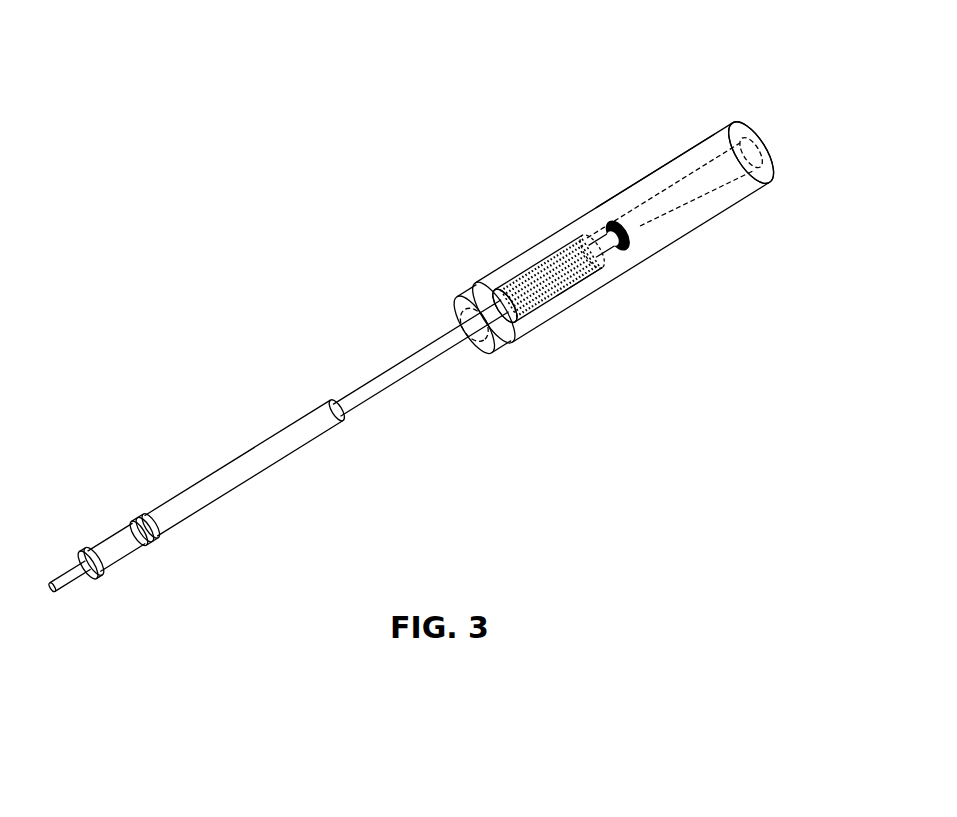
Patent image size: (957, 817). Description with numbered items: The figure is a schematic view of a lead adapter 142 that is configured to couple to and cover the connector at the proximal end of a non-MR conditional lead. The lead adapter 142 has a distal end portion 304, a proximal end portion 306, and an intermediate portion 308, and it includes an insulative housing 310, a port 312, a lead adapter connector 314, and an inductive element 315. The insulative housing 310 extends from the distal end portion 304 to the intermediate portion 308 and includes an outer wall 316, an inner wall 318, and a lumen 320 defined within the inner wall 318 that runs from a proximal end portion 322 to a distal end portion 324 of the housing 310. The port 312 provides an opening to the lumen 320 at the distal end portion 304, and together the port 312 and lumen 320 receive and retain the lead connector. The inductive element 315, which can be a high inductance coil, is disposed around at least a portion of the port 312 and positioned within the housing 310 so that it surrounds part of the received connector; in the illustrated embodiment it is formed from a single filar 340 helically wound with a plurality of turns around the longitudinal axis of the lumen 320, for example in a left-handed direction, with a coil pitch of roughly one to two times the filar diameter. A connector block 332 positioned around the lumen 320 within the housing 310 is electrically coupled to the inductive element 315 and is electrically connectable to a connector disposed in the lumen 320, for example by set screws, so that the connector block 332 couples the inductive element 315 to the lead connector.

The lead adapter 142 is at (283, 293).
The distal end portion 304 is at (700, 140).
The proximal end portion 306 is at (103, 543).
The intermediate portion 308 is at (468, 344).
The insulative housing 310 is at (534, 256).
The port 312 is at (745, 148).
The lead adapter connector 314 is at (63, 594).
The inductive element 315 is at (533, 316).
The outer wall 316 is at (588, 212).
The inner wall 318 is at (648, 206).
The lumen 320 is at (654, 228).
The proximal end portion 322 is at (462, 292).
The distal end portion 324 is at (750, 188).
The connector block 332 is at (640, 257).
The filar 340 is at (498, 290).